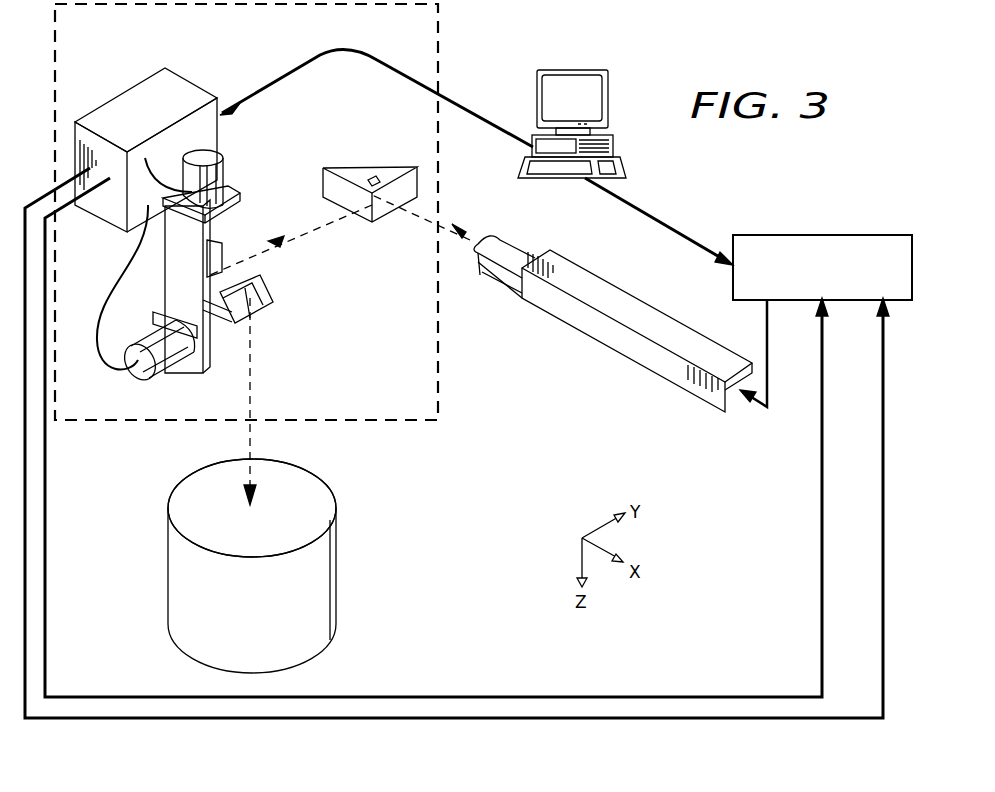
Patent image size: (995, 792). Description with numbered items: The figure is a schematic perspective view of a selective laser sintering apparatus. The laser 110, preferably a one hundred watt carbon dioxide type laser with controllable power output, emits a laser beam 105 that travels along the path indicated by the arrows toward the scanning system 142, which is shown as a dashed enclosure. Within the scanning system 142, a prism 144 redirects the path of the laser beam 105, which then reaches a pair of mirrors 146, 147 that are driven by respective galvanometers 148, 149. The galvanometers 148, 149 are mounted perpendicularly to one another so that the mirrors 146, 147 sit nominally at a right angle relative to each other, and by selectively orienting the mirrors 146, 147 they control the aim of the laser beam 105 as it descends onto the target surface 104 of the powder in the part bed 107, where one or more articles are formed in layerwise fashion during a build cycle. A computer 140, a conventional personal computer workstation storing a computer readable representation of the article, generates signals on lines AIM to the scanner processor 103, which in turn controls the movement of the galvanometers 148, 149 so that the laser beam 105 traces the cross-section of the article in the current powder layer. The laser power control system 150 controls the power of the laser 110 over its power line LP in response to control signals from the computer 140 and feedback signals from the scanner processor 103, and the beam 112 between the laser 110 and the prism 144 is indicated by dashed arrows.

The scanner processor 103 is at (108, 108).
The target surface 104 is at (185, 488).
The laser beam 105 is at (250, 388).
The part bed 107 is at (338, 583).
The laser 110 is at (598, 332).
The laser beam 112 is at (295, 275).
The computer 140 is at (571, 68).
The scanning system 142 is at (393, 424).
The prism 144 is at (373, 172).
The mirror 146 is at (225, 257).
The mirror 147 is at (270, 302).
The galvanometer 148 is at (222, 160).
The galvanometer 149 is at (140, 378).
The laser power control system 150 is at (822, 233).
The lines AIM is at (372, 55).
The laser power signal LP is at (755, 405).